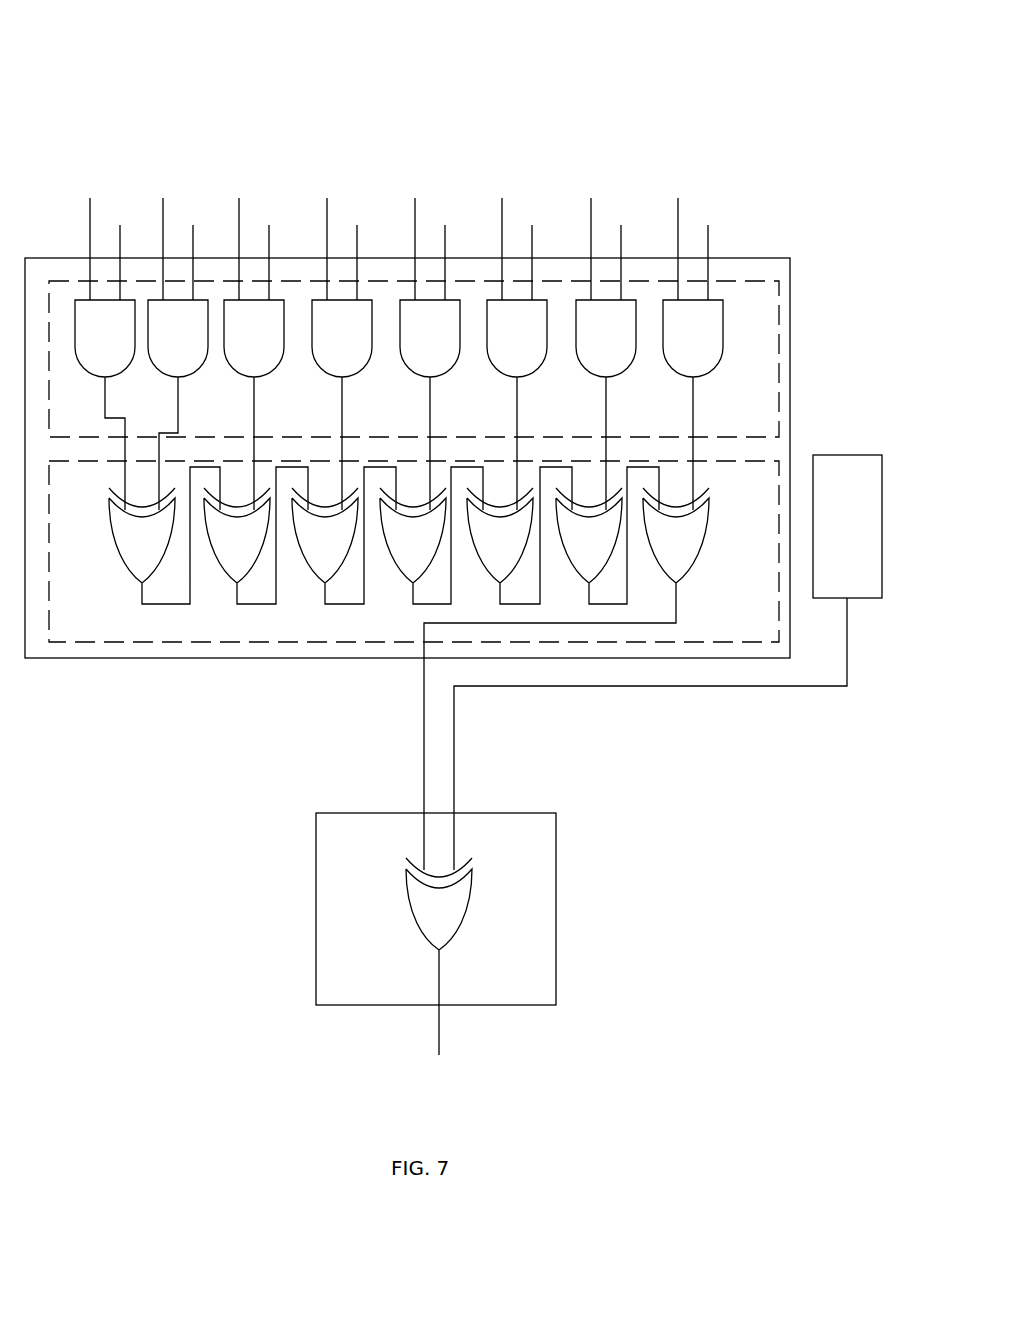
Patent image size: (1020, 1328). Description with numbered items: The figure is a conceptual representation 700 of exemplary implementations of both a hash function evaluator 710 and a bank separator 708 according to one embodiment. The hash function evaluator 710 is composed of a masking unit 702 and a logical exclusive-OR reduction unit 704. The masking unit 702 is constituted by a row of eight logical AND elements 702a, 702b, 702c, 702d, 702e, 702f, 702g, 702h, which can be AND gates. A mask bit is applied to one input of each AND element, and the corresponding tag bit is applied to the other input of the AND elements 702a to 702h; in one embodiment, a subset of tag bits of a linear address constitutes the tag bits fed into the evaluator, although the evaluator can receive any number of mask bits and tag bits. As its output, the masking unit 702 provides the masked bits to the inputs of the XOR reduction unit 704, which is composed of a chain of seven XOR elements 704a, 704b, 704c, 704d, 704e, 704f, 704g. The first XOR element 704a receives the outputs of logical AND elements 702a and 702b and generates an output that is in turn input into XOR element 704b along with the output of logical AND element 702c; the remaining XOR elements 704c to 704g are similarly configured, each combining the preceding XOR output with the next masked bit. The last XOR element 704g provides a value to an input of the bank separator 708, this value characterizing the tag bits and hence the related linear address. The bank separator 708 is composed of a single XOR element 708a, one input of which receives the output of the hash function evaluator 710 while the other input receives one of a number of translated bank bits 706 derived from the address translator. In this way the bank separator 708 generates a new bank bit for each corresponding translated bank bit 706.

The conceptual representation 700 is at (534, 66).
The masking unit 702 is at (763, 356).
The logical AND element 702a is at (83, 346).
The logical AND element 702b is at (156, 346).
The logical AND element 702c is at (232, 346).
The logical AND element 702d is at (320, 346).
The logical AND element 702e is at (408, 346).
The logical AND element 702f is at (497, 346).
The logical AND element 702g is at (584, 346).
The logical AND element 702h is at (671, 346).
The XOR reduction unit 704 is at (763, 547).
The XOR element 704a is at (120, 546).
The XOR element 704b is at (215, 546).
The XOR element 704c is at (303, 546).
The XOR element 704d is at (391, 546).
The XOR element 704e is at (478, 546).
The XOR element 704f is at (569, 546).
The XOR element 704g is at (654, 546).
The translated bank bit 706 is at (838, 455).
The bank separator 708 is at (510, 813).
The XOR element 708a is at (417, 909).
The hash function evaluator 710 is at (750, 258).